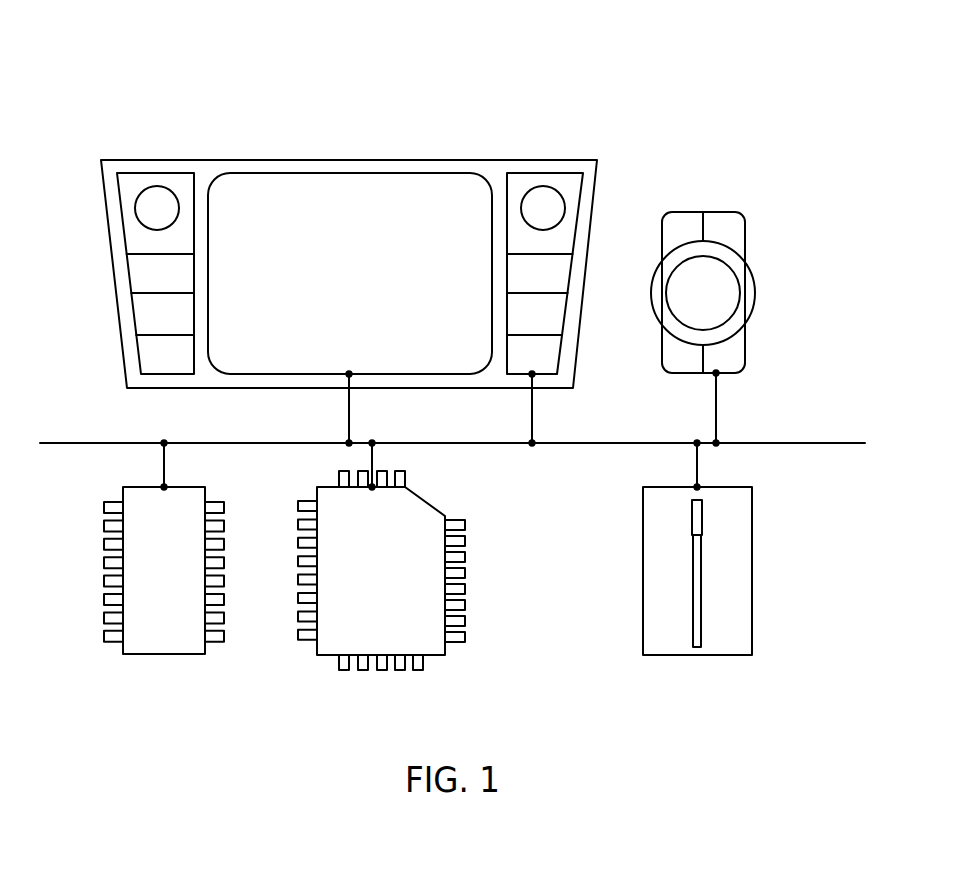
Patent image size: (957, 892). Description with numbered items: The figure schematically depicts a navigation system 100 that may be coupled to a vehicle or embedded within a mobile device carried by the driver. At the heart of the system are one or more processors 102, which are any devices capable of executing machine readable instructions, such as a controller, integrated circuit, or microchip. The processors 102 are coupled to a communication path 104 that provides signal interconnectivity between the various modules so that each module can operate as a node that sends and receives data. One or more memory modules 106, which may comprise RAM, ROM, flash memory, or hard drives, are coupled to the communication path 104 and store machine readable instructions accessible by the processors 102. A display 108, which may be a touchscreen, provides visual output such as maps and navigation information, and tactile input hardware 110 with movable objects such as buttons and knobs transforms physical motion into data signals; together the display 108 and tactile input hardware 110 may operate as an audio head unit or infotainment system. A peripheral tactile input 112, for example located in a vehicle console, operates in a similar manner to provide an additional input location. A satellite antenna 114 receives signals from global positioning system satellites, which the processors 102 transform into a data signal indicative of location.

The navigation system 100 is at (899, 98).
The processors 102 is at (326, 657).
The communication path 104 is at (73, 446).
The memory modules 106 is at (164, 657).
The display 108 is at (350, 187).
The tactile input hardware 110 is at (354, 263).
The peripheral tactile input 112 is at (690, 212).
The satellite antenna 114 is at (697, 657).